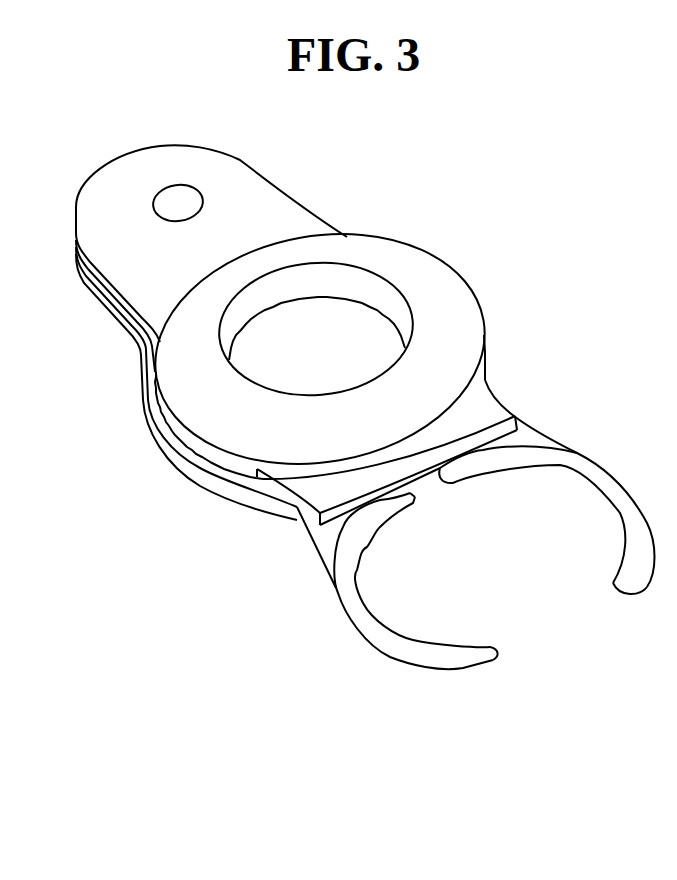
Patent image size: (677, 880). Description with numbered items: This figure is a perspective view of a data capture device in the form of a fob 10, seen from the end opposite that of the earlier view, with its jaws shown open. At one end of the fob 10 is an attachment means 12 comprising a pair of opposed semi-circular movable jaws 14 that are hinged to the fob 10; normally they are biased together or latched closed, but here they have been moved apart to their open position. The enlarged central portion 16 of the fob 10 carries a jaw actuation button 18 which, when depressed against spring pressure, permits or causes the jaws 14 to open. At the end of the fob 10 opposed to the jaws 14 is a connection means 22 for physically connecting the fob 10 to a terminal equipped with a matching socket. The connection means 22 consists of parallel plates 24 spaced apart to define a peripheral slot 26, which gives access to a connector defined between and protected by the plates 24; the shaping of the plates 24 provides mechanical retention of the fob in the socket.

The fob 10 is at (374, 205).
The attachment means 12 is at (588, 679).
The movable jaws 14 is at (628, 518).
The enlarged central portion 16 is at (455, 282).
The jaw actuation button 18 is at (367, 352).
The connection means 22 is at (91, 146).
The parallel plates 24 is at (195, 148).
The peripheral slot 26 is at (86, 261).